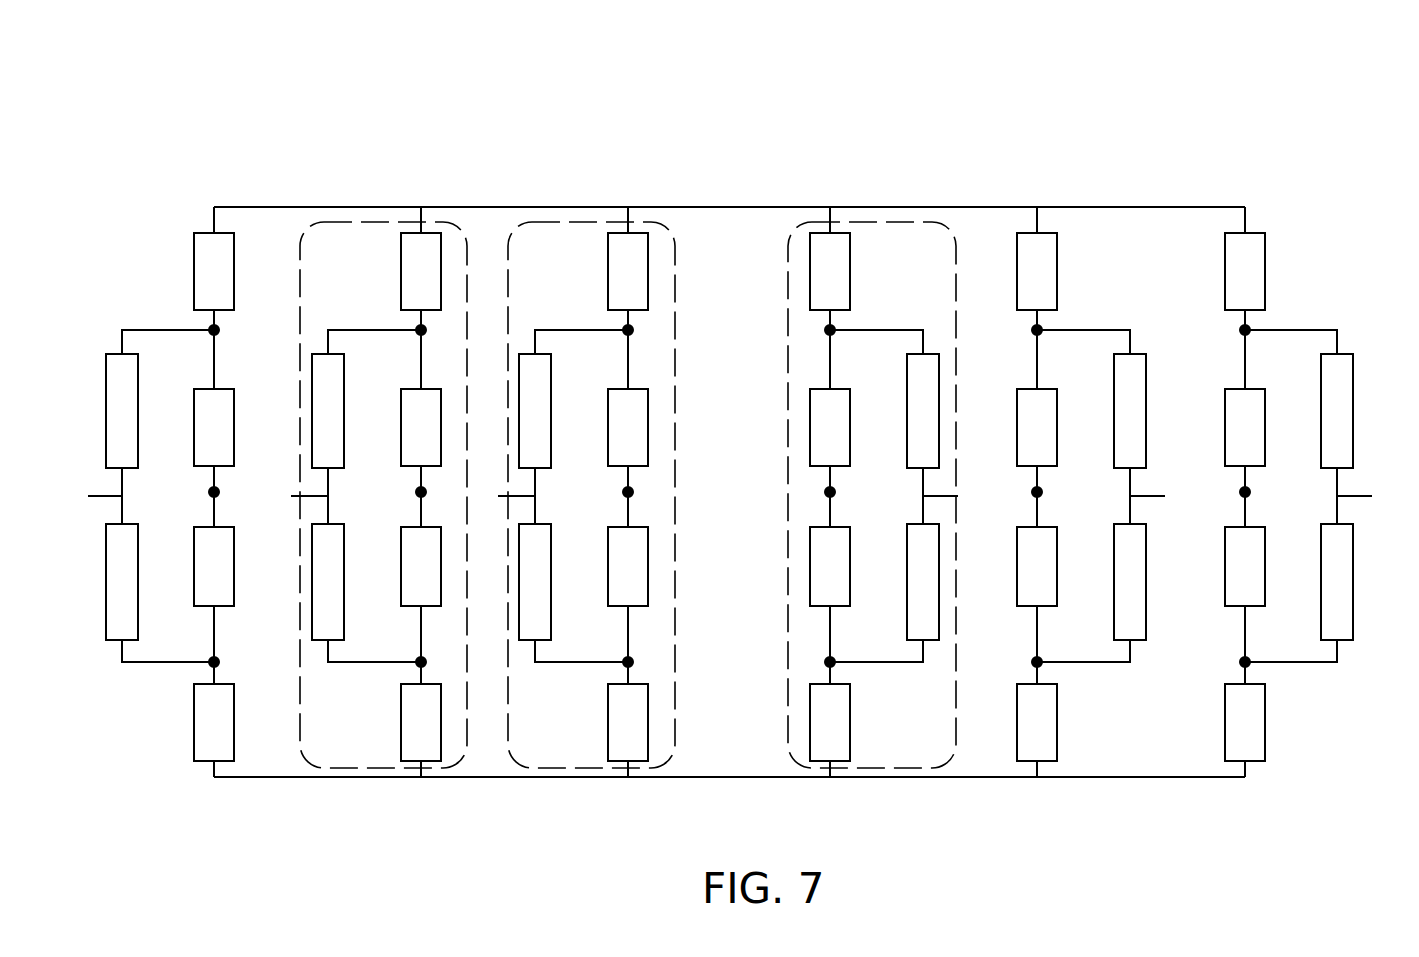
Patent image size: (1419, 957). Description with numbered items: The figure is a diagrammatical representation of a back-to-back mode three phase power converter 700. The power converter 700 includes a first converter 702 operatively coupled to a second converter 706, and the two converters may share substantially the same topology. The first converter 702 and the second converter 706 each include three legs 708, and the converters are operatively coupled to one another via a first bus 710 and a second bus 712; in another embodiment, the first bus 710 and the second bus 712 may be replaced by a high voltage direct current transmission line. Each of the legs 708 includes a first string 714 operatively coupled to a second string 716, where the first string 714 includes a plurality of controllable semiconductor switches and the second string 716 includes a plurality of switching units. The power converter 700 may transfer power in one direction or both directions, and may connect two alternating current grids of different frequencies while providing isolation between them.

The back-to-back mode three phase power converter 700 is at (1218, 93).
The first converter 702 is at (116, 790).
The second converter 706 is at (792, 790).
The leg 708 is at (957, 248).
The first bus 710 is at (742, 206).
The second bus 712 is at (745, 778).
The first string 714 is at (213, 207).
The second string 716 is at (1338, 337).